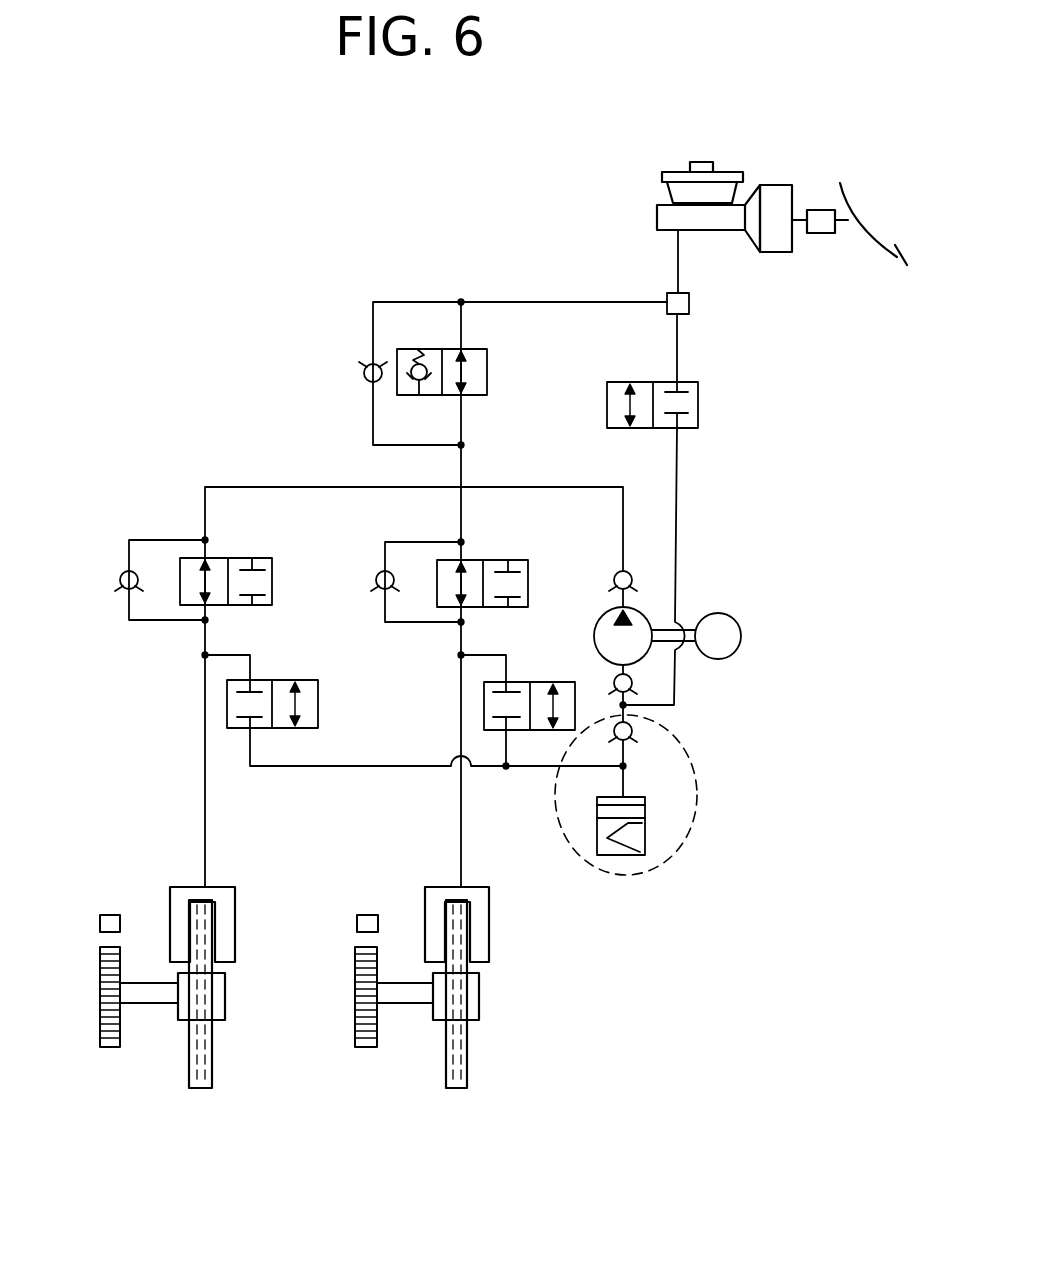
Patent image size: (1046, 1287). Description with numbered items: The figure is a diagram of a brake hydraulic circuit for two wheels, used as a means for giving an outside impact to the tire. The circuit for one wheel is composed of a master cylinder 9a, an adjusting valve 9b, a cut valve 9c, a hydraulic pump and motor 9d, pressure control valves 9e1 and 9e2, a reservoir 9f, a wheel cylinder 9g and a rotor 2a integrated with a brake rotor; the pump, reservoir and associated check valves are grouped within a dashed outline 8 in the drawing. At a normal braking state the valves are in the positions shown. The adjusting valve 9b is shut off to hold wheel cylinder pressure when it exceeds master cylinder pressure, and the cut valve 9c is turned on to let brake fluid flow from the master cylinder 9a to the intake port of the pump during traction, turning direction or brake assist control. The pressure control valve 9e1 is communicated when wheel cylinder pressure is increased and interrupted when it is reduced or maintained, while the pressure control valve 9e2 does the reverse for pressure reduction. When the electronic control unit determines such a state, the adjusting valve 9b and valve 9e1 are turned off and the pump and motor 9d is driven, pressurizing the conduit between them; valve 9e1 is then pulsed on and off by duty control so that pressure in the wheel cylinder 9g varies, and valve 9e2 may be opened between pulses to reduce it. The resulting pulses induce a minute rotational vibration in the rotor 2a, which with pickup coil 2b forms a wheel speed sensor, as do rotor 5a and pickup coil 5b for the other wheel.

The master cylinder 9a is at (657, 218).
The adjusting valve 9b is at (488, 363).
The cut valve 9c is at (698, 408).
The hydraulic pump & motor 9d is at (741, 633).
The pressure control valve 9e1 is at (517, 560).
The pressure control valve 9e2 is at (545, 682).
The reservoir 9f is at (645, 833).
The wheel cylinder 9g is at (489, 935).
The hydraulic pressure unit 8 is at (693, 753).
The rotor 5a is at (100, 980).
The pickup coil 5b is at (102, 920).
The rotor 2a is at (355, 980).
The pickup coil 2b is at (357, 922).